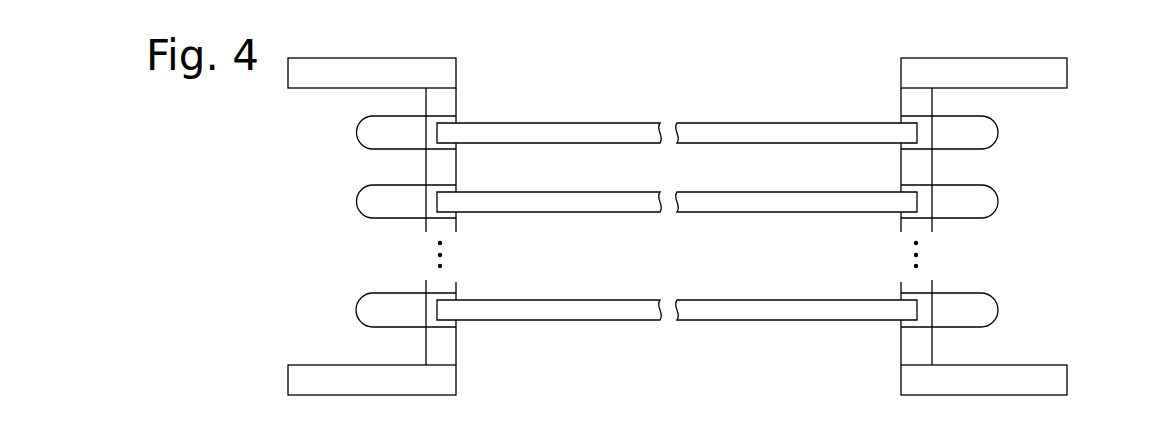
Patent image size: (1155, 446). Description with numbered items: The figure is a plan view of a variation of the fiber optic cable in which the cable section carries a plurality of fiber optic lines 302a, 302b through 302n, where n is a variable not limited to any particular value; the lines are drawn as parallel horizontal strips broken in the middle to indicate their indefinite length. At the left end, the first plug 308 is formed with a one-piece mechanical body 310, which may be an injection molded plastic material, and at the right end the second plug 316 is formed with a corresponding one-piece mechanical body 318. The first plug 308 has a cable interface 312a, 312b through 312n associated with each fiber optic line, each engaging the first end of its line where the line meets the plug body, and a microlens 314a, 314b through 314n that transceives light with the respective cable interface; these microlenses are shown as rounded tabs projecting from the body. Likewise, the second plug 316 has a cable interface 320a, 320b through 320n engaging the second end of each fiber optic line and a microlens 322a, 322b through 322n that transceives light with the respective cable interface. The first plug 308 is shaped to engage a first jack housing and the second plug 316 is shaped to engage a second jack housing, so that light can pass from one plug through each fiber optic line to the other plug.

The first plug 308 is at (416, 43).
The one-piece mechanical body 310 is at (390, 82).
The cable interface 312a is at (432, 117).
The cable interface 312b is at (432, 184).
The cable interface 312n is at (432, 292).
The microlens 314a is at (420, 141).
The microlens 314b is at (420, 211).
The microlens 314n is at (420, 320).
The fiber optic line 302a is at (718, 122).
The fiber optic line 302b is at (718, 192).
The fiber optic line 302n is at (718, 300).
The second plug 316 is at (907, 44).
The one-piece mechanical body 318 is at (1010, 392).
The cable interface 320a is at (922, 117).
The cable interface 320b is at (922, 184).
The cable interface 320n is at (922, 292).
The microlens 322a is at (987, 141).
The microlens 322b is at (987, 211).
The microlens 322n is at (987, 320).